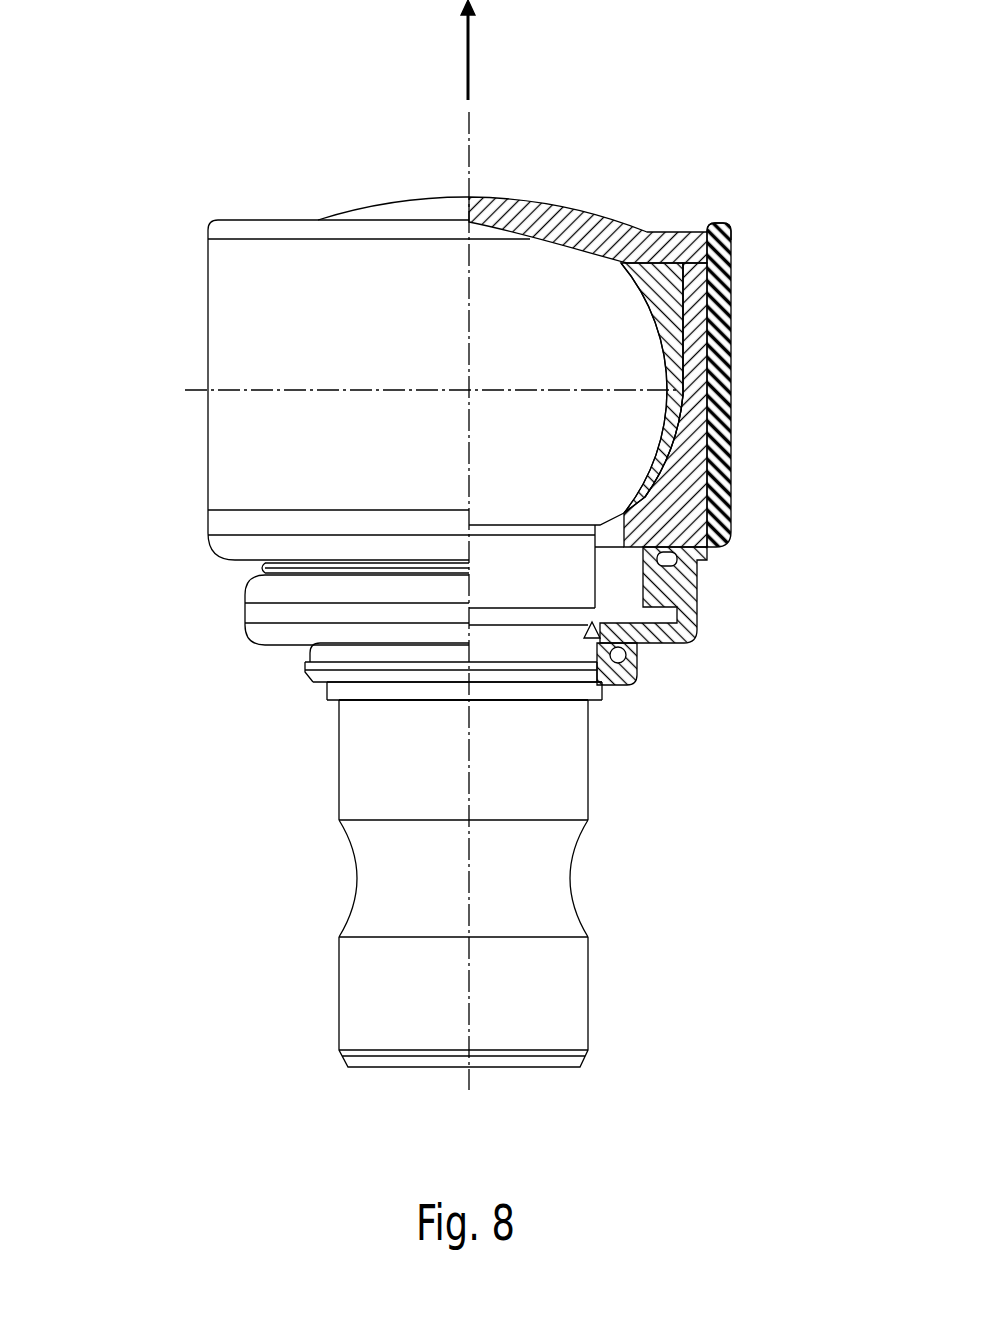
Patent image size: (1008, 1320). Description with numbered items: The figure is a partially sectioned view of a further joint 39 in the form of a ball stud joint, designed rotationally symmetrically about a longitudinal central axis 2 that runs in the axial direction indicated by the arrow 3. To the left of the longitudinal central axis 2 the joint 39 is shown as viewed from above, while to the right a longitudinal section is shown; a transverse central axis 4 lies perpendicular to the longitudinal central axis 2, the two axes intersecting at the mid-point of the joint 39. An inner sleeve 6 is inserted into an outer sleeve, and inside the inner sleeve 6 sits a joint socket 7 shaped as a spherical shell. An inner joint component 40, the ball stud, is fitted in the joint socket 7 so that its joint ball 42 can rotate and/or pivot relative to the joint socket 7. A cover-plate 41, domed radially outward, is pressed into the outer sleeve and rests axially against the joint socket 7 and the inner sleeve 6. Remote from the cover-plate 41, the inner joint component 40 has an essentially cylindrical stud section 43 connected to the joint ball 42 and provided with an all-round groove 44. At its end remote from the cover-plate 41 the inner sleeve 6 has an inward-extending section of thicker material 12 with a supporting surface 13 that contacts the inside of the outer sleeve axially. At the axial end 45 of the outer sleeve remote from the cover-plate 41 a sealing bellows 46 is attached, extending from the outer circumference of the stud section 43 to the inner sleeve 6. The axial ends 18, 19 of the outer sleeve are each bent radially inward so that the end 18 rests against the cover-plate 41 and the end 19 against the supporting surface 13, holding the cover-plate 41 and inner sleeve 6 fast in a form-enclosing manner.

The longitudinal central axis 2 is at (468, 145).
The arrow 3 is at (468, 48).
The transverse central axis 4 is at (268, 389).
The inner sleeve 6 is at (695, 380).
The joint socket 7 is at (668, 410).
The section of thicker material 12 is at (692, 503).
The supporting surface 13 is at (683, 548).
The axial end of outer sleeve 18 is at (708, 226).
The axial end of outer sleeve 19 is at (697, 548).
The joint 39 is at (168, 156).
The inner joint component 40 is at (610, 1090).
The cover-plate 41 is at (586, 208).
The joint ball 42 is at (612, 440).
The stud section 43 is at (563, 747).
The all-round groove 44 is at (573, 875).
The axial end of outer sleeve 45 is at (284, 748).
The sealing bellows 46 is at (267, 635).